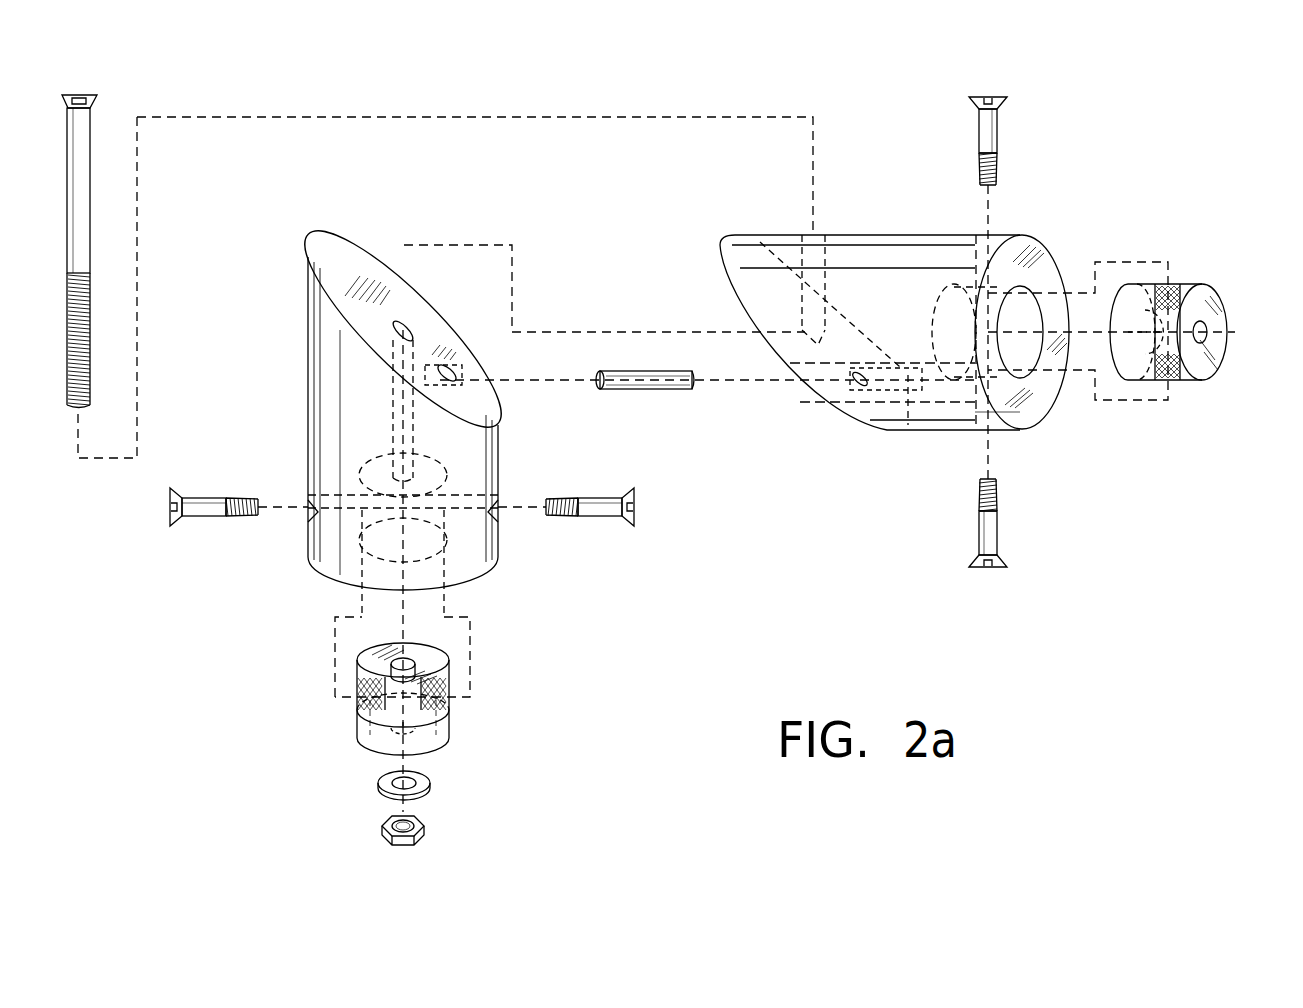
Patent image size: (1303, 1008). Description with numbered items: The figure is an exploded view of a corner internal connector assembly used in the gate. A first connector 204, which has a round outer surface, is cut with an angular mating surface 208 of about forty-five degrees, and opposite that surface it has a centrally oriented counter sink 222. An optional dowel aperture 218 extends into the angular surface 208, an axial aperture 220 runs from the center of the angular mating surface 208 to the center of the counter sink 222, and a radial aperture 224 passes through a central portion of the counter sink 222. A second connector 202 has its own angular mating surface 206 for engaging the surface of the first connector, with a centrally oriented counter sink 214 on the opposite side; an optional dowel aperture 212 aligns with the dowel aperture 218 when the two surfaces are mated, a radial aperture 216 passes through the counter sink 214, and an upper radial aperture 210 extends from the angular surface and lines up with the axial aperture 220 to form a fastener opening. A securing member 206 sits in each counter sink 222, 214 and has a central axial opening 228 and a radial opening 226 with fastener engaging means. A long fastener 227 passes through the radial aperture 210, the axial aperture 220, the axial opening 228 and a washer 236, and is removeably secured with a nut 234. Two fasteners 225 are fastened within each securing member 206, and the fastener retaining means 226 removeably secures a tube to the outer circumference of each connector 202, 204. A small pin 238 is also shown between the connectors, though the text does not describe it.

The second connector 202 is at (1055, 278).
The first connector 204 is at (325, 393).
The securing member 206 is at (445, 660).
The angular mating surface 208 is at (365, 252).
The upper radial aperture 210 is at (810, 240).
The dowel aperture 212 is at (880, 390).
The counter sink 214 is at (952, 300).
The radial aperture 216 is at (995, 410).
The dowel aperture 218 is at (445, 378).
The axial aperture 220 is at (390, 410).
The counter sink 222 is at (380, 555).
The radial aperture 224 is at (500, 507).
The fasteners 225 is at (200, 515).
The radial opening 226 is at (450, 702).
The fastener 227 is at (82, 184).
The axial opening 228 is at (405, 660).
The nut 234 is at (430, 835).
The washer 236 is at (432, 783).
The pin 238 is at (655, 390).